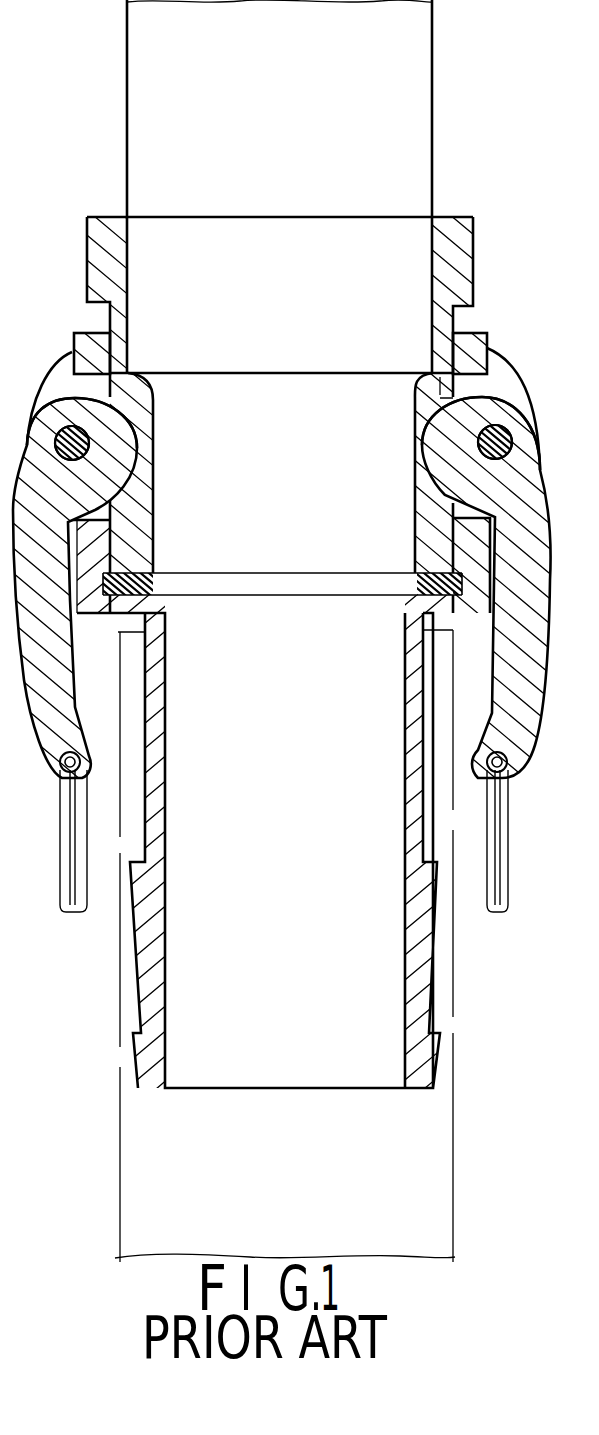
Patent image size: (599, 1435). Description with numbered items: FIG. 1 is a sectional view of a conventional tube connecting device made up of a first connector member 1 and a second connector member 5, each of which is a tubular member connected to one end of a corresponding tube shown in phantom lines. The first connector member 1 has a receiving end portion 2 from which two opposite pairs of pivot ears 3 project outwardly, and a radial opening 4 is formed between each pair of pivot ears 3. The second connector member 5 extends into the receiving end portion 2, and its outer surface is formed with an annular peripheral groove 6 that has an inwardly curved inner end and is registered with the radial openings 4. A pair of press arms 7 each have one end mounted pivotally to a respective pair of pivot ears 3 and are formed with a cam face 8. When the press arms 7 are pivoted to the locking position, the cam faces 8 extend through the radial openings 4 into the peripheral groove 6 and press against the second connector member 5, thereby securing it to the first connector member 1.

The first connector member 1 is at (415, 915).
The receiving end portion 2 is at (470, 343).
The pivot ears 3 is at (518, 402).
The radial opening 4 is at (457, 390).
The second connector member 5 is at (483, 237).
The annular peripheral groove 6 is at (457, 400).
The press arms 7 is at (538, 550).
The cam face 8 is at (433, 445).